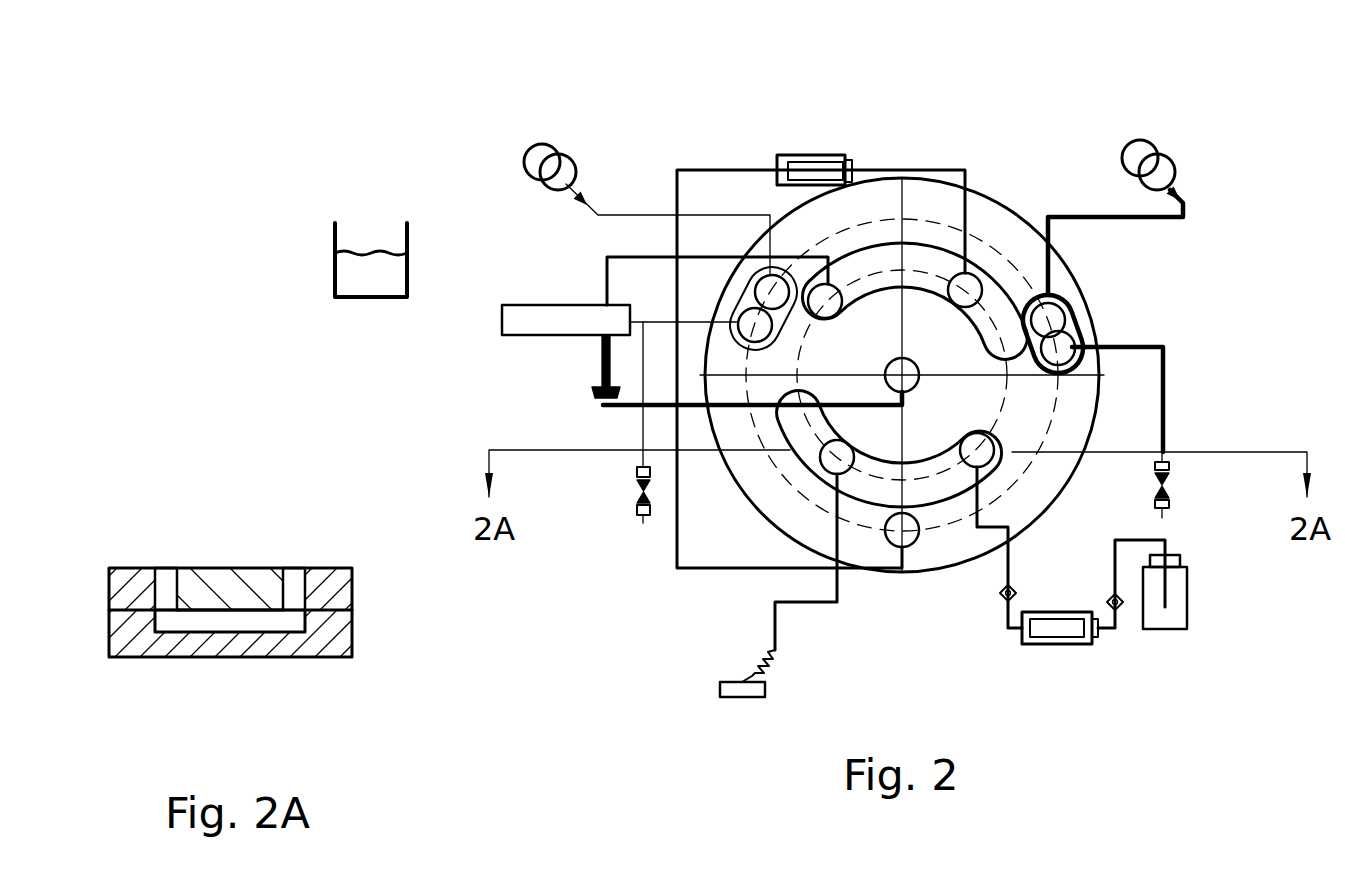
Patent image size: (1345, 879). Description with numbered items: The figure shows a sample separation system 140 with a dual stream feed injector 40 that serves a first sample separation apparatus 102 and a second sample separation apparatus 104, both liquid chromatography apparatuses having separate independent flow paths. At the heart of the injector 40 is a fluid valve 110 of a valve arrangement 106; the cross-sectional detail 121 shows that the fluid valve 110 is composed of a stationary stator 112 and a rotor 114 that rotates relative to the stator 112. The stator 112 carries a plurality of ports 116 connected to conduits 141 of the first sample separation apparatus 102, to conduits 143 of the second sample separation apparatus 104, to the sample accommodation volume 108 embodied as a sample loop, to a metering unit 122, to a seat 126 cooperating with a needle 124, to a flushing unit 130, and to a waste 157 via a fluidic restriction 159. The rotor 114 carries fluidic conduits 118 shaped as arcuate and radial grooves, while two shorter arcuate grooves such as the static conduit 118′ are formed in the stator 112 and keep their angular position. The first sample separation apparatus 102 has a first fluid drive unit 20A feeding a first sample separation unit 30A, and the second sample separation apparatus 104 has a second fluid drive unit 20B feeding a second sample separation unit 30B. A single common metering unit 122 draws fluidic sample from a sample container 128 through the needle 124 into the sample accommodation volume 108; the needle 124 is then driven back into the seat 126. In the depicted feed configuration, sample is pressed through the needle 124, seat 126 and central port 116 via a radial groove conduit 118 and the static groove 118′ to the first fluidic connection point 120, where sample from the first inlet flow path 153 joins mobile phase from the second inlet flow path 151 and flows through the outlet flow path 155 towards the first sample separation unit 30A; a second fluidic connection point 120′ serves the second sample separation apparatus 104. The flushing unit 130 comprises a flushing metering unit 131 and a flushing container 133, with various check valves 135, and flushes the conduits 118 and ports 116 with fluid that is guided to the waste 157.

In FIG. 2, the injector 40 is at (1086, 104).
In FIG. 2, the fluid valve 110 is at (877, 175).
In FIG. 2A, the fluid valve 110 is at (115, 548).
In FIG. 2, the fluidic conduits 118 is at (885, 275).
In FIG. 2A, the fluidic conduits 118 is at (228, 620).
In FIG. 2, the ports 116 is at (745, 295).
In FIG. 2A, the ports 116 is at (165, 575).
In FIG. 2, the first fluidic connection point 120 is at (735, 302).
In FIG. 2, the second fluidic connection point 120′ is at (1040, 292).
In FIG. 2, the static conduit 118′ is at (1100, 368).
In FIG. 2, the metering unit 122 is at (812, 155).
In FIG. 2, the second inlet flow path 151 is at (757, 216).
In FIG. 2, the conduits 141 is at (620, 218).
In FIG. 2, the sample accommodation volume 108 is at (502, 320).
In FIG. 2, the outlet flow path 155 is at (760, 340).
In FIG. 2, the first sample separation apparatus 102 is at (512, 207).
In FIG. 2, the first sample separation unit 30A is at (635, 478).
In FIG. 2, the second sample separation unit 30B is at (1170, 483).
In FIG. 2, the needle 124 is at (600, 365).
In FIG. 2, the seat 126 is at (598, 400).
In FIG. 2, the first fluid drive unit 20A is at (530, 150).
In FIG. 2, the second fluid drive unit 20B is at (1165, 140).
In FIG. 2, the conduits 143 is at (1185, 225).
In FIG. 2, the second sample separation apparatus 104 is at (1230, 168).
In FIG. 2, the valve arrangement 106 is at (1095, 280).
In FIG. 2, the flushing unit 130 is at (1130, 665).
In FIG. 2, the check valves 135 is at (1018, 588).
In FIG. 2, the flushing metering unit 131 is at (1078, 640).
In FIG. 2, the flushing container 133 is at (1175, 593).
In FIG. 2, the first inlet flow path 153 is at (808, 400).
In FIG. 2, the fluidic restriction 159 is at (766, 656).
In FIG. 2, the waste 157 is at (720, 690).
In FIG. 2, the sample separation system 140 is at (362, 198).
In FIG. 2, the sample container 128 is at (333, 268).
In FIG. 2A, the stator 112 is at (235, 592).
In FIG. 2A, the rotor 114 is at (130, 640).
In FIG. 2A, the detail 121 is at (300, 552).